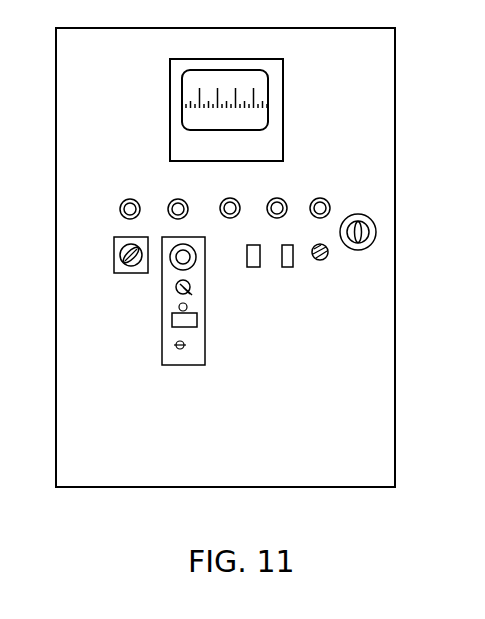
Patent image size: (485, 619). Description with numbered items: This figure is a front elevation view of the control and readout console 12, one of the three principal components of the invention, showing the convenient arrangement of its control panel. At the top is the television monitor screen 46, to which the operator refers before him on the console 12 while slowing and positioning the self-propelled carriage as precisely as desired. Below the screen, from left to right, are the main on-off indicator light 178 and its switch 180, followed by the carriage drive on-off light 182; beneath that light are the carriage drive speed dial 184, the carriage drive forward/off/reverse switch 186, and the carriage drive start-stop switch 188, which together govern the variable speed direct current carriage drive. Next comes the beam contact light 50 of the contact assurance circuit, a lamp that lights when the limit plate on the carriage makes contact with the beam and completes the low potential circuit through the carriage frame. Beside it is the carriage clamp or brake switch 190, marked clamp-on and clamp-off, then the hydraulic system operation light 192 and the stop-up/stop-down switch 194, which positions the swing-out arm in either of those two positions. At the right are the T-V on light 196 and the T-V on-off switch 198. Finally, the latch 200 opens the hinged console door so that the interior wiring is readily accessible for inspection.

The control and readout console 12 is at (400, 385).
The television monitor screen 46 is at (283, 108).
The beam contact light 50 is at (237, 200).
The main on-off indicator light 178 is at (120, 203).
The main on-off switch 180 is at (122, 255).
The carriage drive on-off light 182 is at (185, 200).
The carriage drive speed dial 184 is at (174, 268).
The carriage drive forward/off/reverse switch 186 is at (177, 291).
The carriage drive start-stop switch 188 is at (173, 328).
The carriage clamp or brake switch 190 is at (247, 262).
The hydraulic system operation light 192 is at (282, 200).
The stop-up/stop-down switch 194 is at (293, 262).
The T-V on light 196 is at (327, 202).
The T-V on-off switch 198 is at (327, 259).
The latch 200 is at (377, 230).